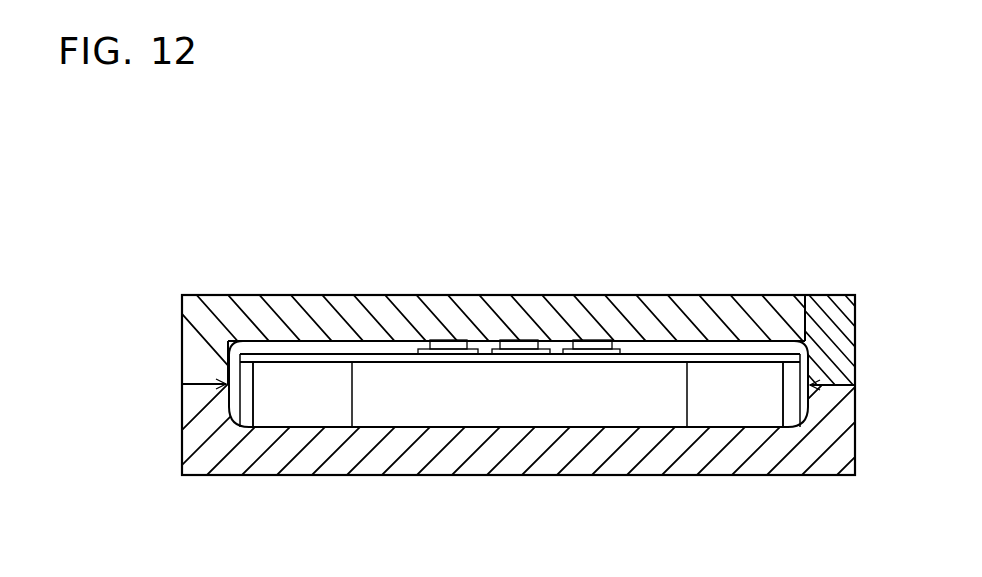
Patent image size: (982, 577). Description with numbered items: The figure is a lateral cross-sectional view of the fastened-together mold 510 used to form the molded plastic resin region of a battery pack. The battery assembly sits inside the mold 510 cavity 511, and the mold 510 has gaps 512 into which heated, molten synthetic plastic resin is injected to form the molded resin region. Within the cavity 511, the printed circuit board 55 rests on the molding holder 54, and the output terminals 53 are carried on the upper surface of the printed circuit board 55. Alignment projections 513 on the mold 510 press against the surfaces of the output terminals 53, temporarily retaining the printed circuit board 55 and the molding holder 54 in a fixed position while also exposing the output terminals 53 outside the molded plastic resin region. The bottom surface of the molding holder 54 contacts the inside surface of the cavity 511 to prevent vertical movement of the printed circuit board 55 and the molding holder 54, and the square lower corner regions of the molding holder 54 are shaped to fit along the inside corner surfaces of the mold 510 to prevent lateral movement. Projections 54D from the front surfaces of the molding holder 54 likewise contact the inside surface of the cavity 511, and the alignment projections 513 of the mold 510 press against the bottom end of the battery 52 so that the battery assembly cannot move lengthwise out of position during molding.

The battery 52 is at (805, 340).
The output terminals 53 is at (443, 355).
The molding holder 54 is at (484, 414).
The projections 54D is at (305, 414).
The printed circuit board 55 is at (372, 358).
The mold 510 is at (563, 315).
The mold cavity 511 is at (720, 335).
The gaps 512 is at (257, 341).
The alignment projections 513 is at (448, 341).